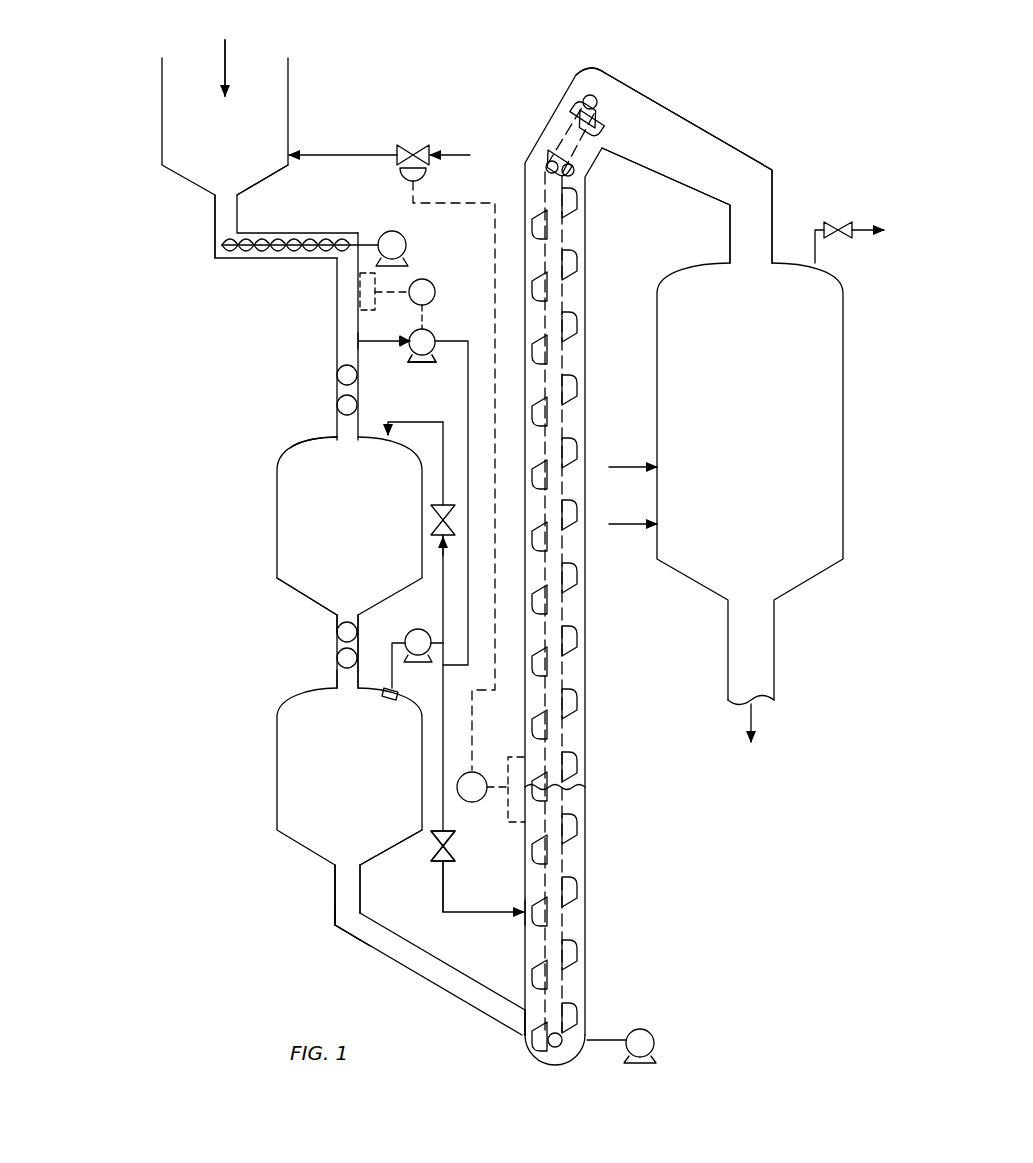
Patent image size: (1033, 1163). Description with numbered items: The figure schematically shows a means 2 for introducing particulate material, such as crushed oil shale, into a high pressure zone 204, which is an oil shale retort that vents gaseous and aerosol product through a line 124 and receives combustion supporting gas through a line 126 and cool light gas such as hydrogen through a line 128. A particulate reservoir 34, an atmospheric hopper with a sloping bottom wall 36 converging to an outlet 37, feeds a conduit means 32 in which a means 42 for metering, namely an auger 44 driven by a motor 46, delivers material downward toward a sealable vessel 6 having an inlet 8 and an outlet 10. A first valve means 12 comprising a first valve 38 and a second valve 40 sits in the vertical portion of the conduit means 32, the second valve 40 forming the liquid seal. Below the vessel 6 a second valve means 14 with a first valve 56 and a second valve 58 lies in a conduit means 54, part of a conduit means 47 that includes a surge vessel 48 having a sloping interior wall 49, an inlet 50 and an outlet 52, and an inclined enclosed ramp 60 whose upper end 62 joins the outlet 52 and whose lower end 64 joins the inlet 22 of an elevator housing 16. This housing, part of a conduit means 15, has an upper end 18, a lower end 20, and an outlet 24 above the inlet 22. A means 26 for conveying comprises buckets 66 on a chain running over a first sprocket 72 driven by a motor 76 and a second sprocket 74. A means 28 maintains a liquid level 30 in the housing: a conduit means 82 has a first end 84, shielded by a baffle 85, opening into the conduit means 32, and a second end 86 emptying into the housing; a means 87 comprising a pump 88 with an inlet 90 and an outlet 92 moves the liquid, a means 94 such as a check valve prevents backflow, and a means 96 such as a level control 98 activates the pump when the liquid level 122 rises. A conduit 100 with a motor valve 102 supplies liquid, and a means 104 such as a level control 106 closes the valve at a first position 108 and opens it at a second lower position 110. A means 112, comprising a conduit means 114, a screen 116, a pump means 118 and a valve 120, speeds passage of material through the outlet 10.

The means for introducing a particulate material into a high pressure zone 2 is at (293, 942).
The sealable vessel 6 is at (277, 490).
The inlet 8 is at (330, 441).
The outlet 10 is at (332, 614).
The first valve means 12 is at (301, 380).
The second valve means 14 is at (297, 647).
The conduit means 15 is at (519, 1056).
The elevator housing 16 is at (618, 561).
The upper end 18 is at (588, 74).
The lower end 20 is at (575, 1066).
The inlet 22 is at (522, 1037).
The outlet 24 is at (610, 72).
The means for conveying particulate material 26 is at (590, 683).
The means for maintaining a liquid level 28 is at (428, 874).
The liquid level 30 is at (292, 590).
The conduit means 32 is at (332, 312).
The particulate reservoir 34 is at (162, 170).
The sloping bottom wall 36 is at (259, 182).
The outlet 37 is at (212, 200).
The first valve 38 is at (337, 372).
The second valve 40 is at (337, 405).
The means for metering particulate material 42 is at (300, 215).
The auger 44 is at (285, 237).
The motor 46 is at (400, 233).
The conduit means 47 is at (312, 902).
The second vessel 48 is at (326, 806).
The lower sloping interior wall 49 is at (312, 846).
The inlet 50 is at (336, 688).
The outlet 52 is at (336, 867).
The conduit means 54 is at (362, 650).
The first valve 56 is at (337, 632).
The second valve 58 is at (337, 660).
The inclined, enclosed ramp 60 is at (410, 968).
The upper end 62 is at (336, 925).
The lower end 64 is at (520, 1000).
The buckets 66 is at (538, 575).
The first sprocket 72 is at (563, 1036).
The second sprocket 74 is at (588, 96).
The motor 76 is at (656, 1054).
The conduit means 82 is at (441, 906).
The first end 84 is at (365, 343).
The baffle 85 is at (357, 342).
The second end 86 is at (518, 912).
The means for causing fluid flow 87 is at (434, 362).
The pump 88 is at (431, 336).
The inlet 90 is at (408, 338).
The outlet 92 is at (434, 352).
The means for preventing liquid flow 94 is at (431, 848).
The means for activating the pump 96 is at (438, 282).
The level control 98 is at (434, 287).
The conduit 100 is at (352, 152).
The motor valve 102 is at (420, 147).
The means for manipulating the motor valve 104 is at (466, 805).
The level control 106 is at (478, 772).
The first position 108 is at (510, 757).
The second lower position 110 is at (512, 826).
The means for speeding passage of particulate material 112 is at (443, 430).
The conduit means 114 is at (443, 596).
The screen 116 is at (385, 696).
The pump means 118 is at (428, 658).
The valve 120 is at (431, 524).
The liquid level 122 is at (360, 283).
The line 124 is at (815, 250).
The line 126 is at (622, 452).
The line 128 is at (626, 506).
The high pressure zone 204 is at (750, 502).